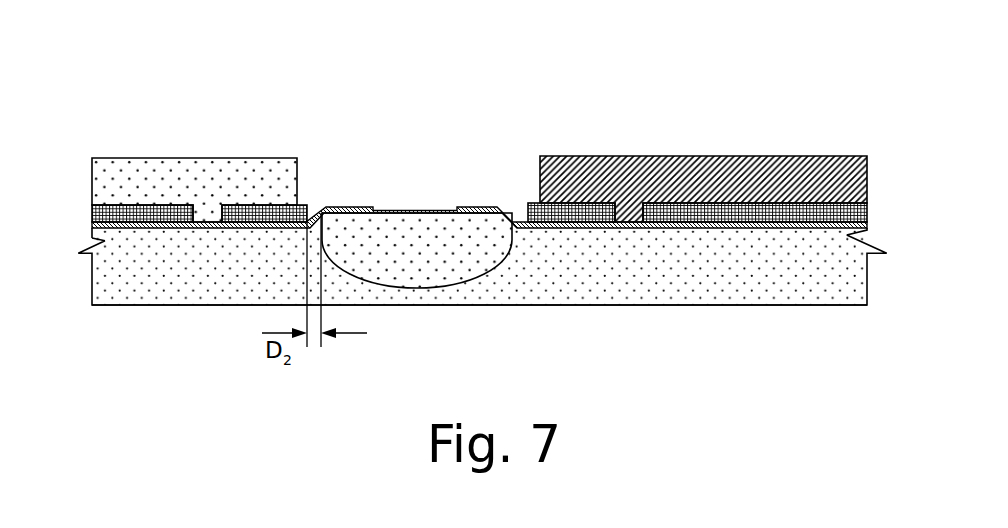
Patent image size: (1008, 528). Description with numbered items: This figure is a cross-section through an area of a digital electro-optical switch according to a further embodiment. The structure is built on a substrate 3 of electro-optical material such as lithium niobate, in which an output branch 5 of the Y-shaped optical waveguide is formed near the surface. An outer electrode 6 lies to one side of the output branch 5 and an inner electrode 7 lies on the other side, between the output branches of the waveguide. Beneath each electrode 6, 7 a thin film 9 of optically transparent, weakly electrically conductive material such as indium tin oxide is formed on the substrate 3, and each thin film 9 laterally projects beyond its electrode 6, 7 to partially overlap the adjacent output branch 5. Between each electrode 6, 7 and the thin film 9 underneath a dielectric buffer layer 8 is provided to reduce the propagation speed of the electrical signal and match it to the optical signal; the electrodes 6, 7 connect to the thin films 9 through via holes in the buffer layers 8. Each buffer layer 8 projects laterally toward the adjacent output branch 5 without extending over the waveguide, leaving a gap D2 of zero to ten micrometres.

The substrate 3 is at (150, 287).
The output branch 5 is at (447, 273).
The outer electrode 6 is at (205, 175).
The inner electrode 7 is at (732, 182).
The dielectric buffer layer 8 is at (297, 205).
The thin film 9 is at (283, 227).